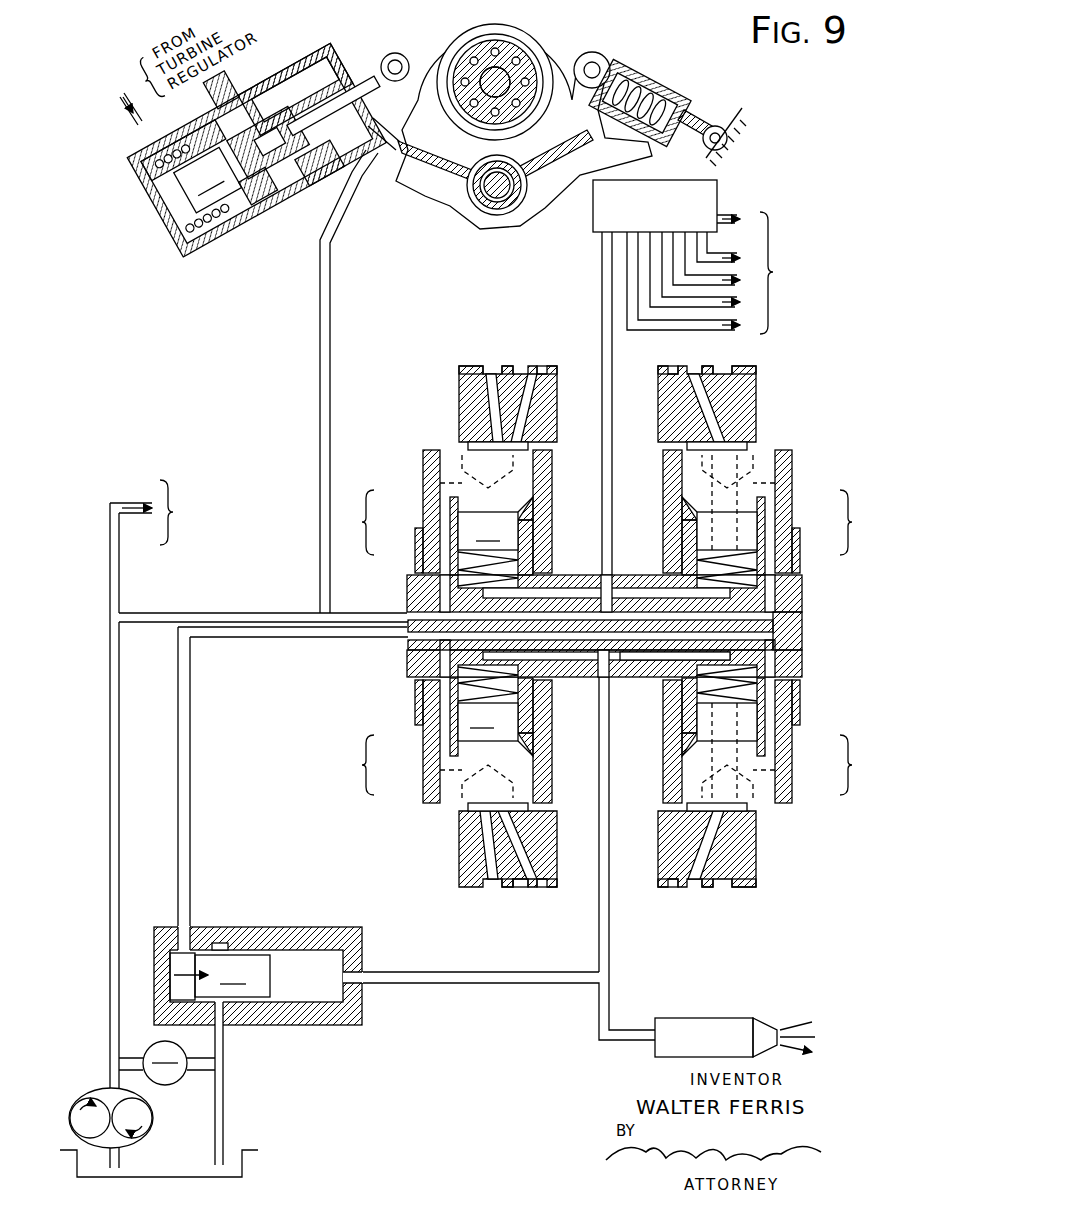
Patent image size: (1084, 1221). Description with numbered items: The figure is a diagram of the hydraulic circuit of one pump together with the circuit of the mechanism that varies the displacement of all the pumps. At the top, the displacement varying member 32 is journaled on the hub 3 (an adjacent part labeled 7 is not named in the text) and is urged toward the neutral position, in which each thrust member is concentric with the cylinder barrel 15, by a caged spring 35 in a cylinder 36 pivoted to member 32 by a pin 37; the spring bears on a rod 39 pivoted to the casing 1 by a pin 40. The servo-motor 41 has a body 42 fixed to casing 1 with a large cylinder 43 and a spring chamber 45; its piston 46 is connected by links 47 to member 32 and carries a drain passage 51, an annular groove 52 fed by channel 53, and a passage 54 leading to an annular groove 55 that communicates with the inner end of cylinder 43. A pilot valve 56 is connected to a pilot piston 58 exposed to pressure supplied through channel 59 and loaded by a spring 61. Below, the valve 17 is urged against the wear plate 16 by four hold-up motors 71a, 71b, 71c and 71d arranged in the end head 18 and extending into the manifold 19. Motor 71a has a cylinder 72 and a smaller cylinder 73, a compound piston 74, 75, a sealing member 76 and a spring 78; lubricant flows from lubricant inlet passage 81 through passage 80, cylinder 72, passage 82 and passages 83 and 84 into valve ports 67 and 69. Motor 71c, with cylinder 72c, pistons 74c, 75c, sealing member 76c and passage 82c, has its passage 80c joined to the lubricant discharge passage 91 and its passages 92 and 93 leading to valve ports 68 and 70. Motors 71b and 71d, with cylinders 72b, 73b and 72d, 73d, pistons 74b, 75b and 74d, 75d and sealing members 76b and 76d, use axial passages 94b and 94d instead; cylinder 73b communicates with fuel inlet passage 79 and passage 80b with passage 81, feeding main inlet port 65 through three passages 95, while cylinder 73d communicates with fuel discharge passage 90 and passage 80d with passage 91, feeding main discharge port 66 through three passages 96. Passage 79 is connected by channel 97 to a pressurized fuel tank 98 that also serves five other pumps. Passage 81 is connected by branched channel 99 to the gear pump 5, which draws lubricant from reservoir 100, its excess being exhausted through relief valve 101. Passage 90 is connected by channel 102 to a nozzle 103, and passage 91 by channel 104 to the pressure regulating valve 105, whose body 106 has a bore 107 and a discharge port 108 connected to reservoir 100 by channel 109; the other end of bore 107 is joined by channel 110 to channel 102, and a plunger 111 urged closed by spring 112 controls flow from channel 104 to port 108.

The casing 1 is at (734, 122).
The hub 3 is at (470, 193).
The gear pump 5 is at (124, 1150).
The shaft 7 is at (490, 200).
The cylinder barrel 15 is at (472, 56).
The wear plate 16 is at (516, 890).
The valve 17 is at (459, 386).
The end head 18 is at (424, 466).
The manifold 19 is at (418, 662).
The displacement varying member 32 is at (440, 168).
The caged spring 35 is at (650, 84).
The cylinder 36 is at (622, 70).
The pin 37 is at (598, 56).
The rod 39 is at (692, 114).
The pin 40 is at (703, 146).
The servo-motor 41 is at (133, 256).
The body 42 is at (290, 222).
The large cylinder 43 is at (324, 52).
The spring chamber 45 is at (172, 246).
The piston 46 is at (380, 124).
The links 47 is at (392, 52).
The drain passage 51 is at (340, 62).
The annular groove 52 is at (274, 64).
The channel 53 is at (320, 378).
The passage 54 is at (322, 170).
The annular groove 55 is at (238, 88).
The pilot valve 56 is at (268, 142).
The pilot piston 58 is at (208, 180).
The channel 59 is at (127, 134).
The spring 61 is at (245, 232).
The main inlet port 65 is at (514, 366).
The main discharge port 66 is at (700, 890).
The valve port 67 is at (484, 366).
The valve port 68 is at (486, 890).
The valve port 69 is at (546, 366).
The valve port 70 is at (540, 888).
The hold-up motor 71a is at (357, 522).
The hold-up motor 71b is at (862, 522).
The hold-up motor 71c is at (354, 765).
The hold-up motor 71d is at (862, 765).
The cylinder 72 is at (440, 508).
The cylinder 72b is at (768, 510).
The cylinder 72c is at (440, 742).
The cylinder 72d is at (768, 746).
The smaller concentric cylinder 73 is at (508, 560).
The smaller cylinder 73b is at (710, 562).
The smaller cylinder 73d is at (702, 696).
The piston 74 is at (540, 464).
The piston 74b is at (768, 476).
The piston 74c is at (524, 780).
The piston 74d is at (688, 770).
The piston 75 is at (488, 531).
The piston 75b is at (700, 530).
The piston 75c is at (488, 722).
The piston 75d is at (702, 726).
The annular sealing member 76 is at (462, 446).
The annular sealing member 76b is at (750, 448).
The annular sealing member 76c is at (468, 810).
The annular sealing member 76d is at (748, 808).
The spring 78 is at (508, 572).
The fuel inlet passage 79 is at (654, 572).
The passage 80 is at (440, 548).
The passage 80b is at (770, 556).
The passage 80c is at (440, 712).
The passage 80d is at (770, 706).
The lubricant inlet passage 81 is at (790, 614).
The passage 82 is at (440, 484).
The passage 82c is at (440, 770).
The passage 83 is at (490, 408).
The passage 84 is at (522, 414).
The fuel discharge passage 90 is at (668, 660).
The lubricant discharge passage 91 is at (790, 648).
The passage 92 is at (488, 850).
The passage 93 is at (528, 860).
The axial passage 94b is at (710, 484).
The axial passage 94d is at (710, 790).
The passages 95 is at (714, 418).
The passages 96 is at (716, 832).
The channel 97 is at (602, 272).
The fuel supply tank 98 is at (593, 212).
The branched channel 99 is at (162, 602).
The reservoir 100 is at (236, 1152).
The relief valve 101 is at (166, 1082).
The channel 102 is at (609, 952).
The nozzle 103 is at (722, 1018).
The channel 104 is at (190, 783).
The pressure regulating valve 105 is at (272, 920).
The body 106 is at (352, 936).
The axial bore 107 is at (348, 996).
The annular discharge port 108 is at (222, 942).
The channel 109 is at (224, 1080).
The channel 110 is at (554, 966).
The plunger 111 is at (220, 976).
The spring 112 is at (332, 1020).